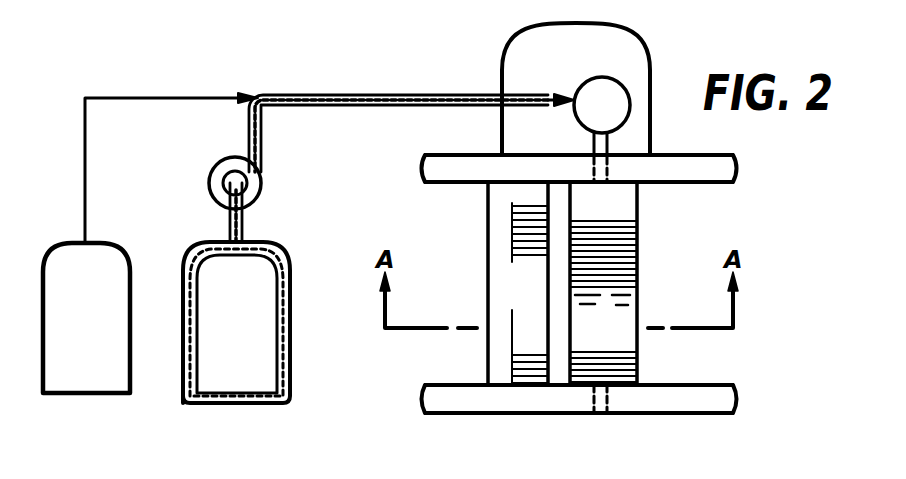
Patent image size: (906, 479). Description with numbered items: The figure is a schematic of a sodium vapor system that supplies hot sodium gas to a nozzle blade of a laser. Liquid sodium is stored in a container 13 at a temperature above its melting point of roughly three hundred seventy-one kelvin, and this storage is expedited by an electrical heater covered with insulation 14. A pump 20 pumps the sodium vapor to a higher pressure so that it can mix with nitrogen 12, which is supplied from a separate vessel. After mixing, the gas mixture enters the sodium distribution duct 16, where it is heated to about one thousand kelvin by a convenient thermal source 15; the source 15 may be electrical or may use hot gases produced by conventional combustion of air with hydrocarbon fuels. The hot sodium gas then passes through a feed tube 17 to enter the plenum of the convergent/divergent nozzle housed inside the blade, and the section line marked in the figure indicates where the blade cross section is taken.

The nitrogen 12 is at (64, 243).
The container 13 is at (210, 268).
The insulation 14 is at (307, 107).
The thermal source 15 is at (504, 56).
The sodium distribution duct 16 is at (607, 78).
The feed tube 17 is at (596, 143).
The pump 20 is at (215, 168).